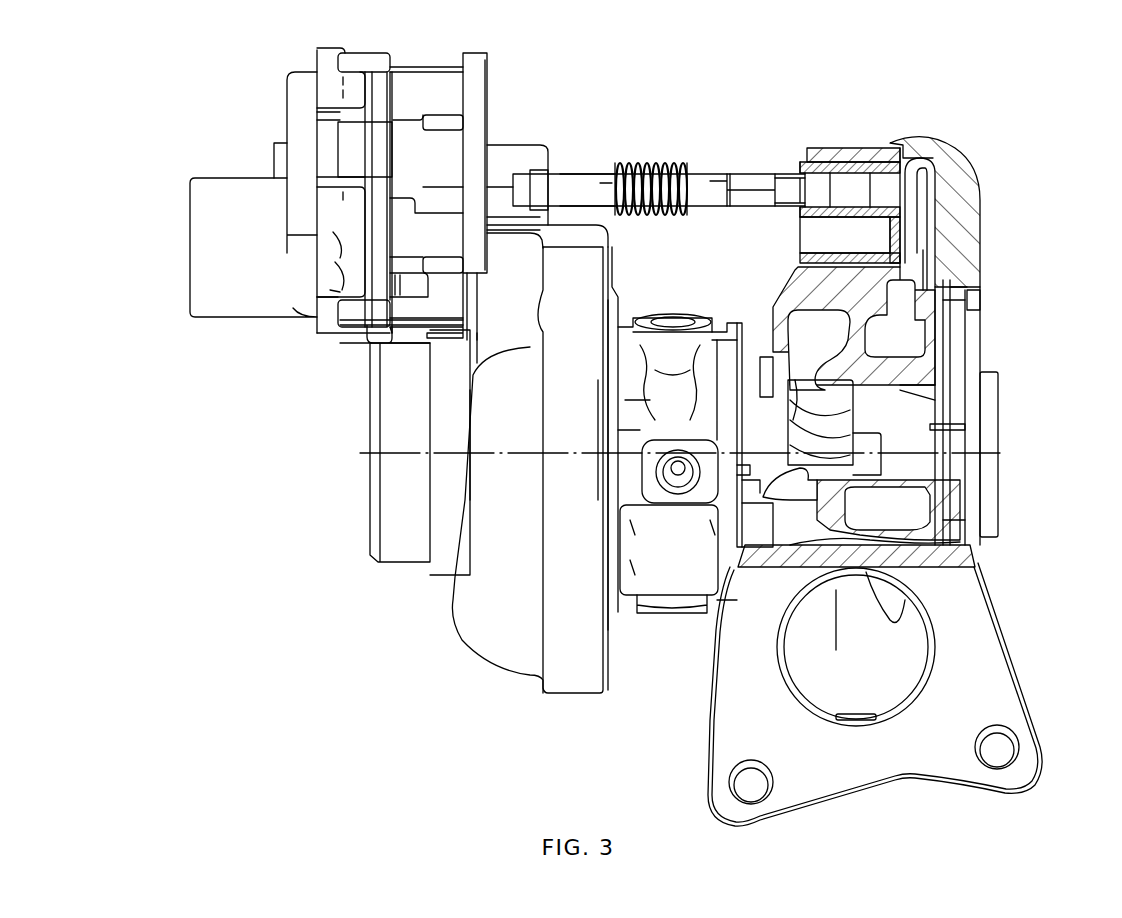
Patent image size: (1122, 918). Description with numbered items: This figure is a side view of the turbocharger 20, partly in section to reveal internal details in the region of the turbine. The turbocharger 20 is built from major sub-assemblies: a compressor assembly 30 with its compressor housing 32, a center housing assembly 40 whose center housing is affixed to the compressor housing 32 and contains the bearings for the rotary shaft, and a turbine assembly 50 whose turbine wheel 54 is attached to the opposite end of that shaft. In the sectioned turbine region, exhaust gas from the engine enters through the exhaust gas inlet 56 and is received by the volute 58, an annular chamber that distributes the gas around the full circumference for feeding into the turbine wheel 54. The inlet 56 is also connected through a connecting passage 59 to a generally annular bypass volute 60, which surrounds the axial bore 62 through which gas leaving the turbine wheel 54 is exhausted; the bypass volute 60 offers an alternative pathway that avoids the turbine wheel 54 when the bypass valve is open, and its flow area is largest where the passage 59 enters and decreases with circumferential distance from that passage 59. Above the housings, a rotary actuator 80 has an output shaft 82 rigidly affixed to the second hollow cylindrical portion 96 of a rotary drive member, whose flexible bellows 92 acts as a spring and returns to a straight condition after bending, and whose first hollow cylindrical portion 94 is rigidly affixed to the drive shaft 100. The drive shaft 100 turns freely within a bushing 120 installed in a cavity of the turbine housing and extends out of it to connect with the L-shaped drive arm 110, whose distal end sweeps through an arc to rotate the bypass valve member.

The turbocharger 20 is at (280, 592).
The compressor assembly 30 is at (393, 570).
The compressor housing 32 is at (502, 650).
The center housing assembly 40 is at (655, 612).
The turbine assembly 50 is at (843, 145).
The turbine wheel 54 is at (840, 420).
The exhaust gas inlet 56 is at (868, 653).
The volute 58 is at (820, 332).
The connecting passage 59 is at (903, 600).
The bypass volute 60 is at (900, 330).
The axial bore 62 is at (925, 392).
The rotary actuator 80 is at (447, 162).
The output shaft 82 is at (561, 180).
The bellows 92 is at (653, 162).
The first hollow cylindrical portion 94 is at (701, 170).
The second hollow cylindrical portion 96 is at (601, 170).
The drive shaft 100 is at (783, 185).
The drive arm 110 is at (913, 222).
The bushing 120 is at (863, 168).